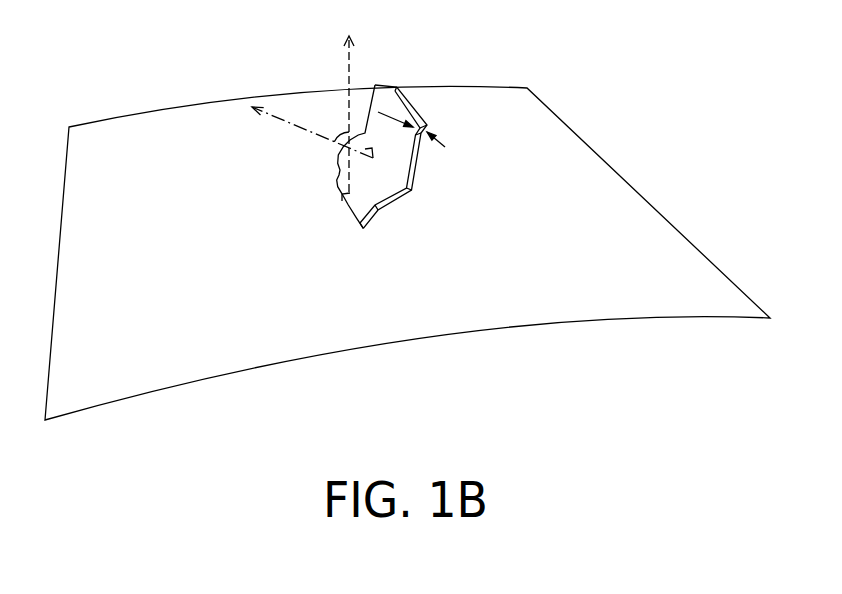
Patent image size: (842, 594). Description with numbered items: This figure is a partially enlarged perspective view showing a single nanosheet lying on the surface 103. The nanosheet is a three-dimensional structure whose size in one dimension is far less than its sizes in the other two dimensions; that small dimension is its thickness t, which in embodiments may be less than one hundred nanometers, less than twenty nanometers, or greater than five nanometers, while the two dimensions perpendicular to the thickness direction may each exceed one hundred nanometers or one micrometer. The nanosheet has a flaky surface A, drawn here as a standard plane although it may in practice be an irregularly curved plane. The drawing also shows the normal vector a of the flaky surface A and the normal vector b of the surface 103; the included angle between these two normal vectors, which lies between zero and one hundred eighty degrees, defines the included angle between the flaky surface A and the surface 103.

The surface 103 is at (523, 113).
The flaky surface A is at (388, 120).
The normal vector of the flaky surface a is at (306, 132).
The normal vector of the surface b is at (343, 102).
The thickness t is at (417, 130).